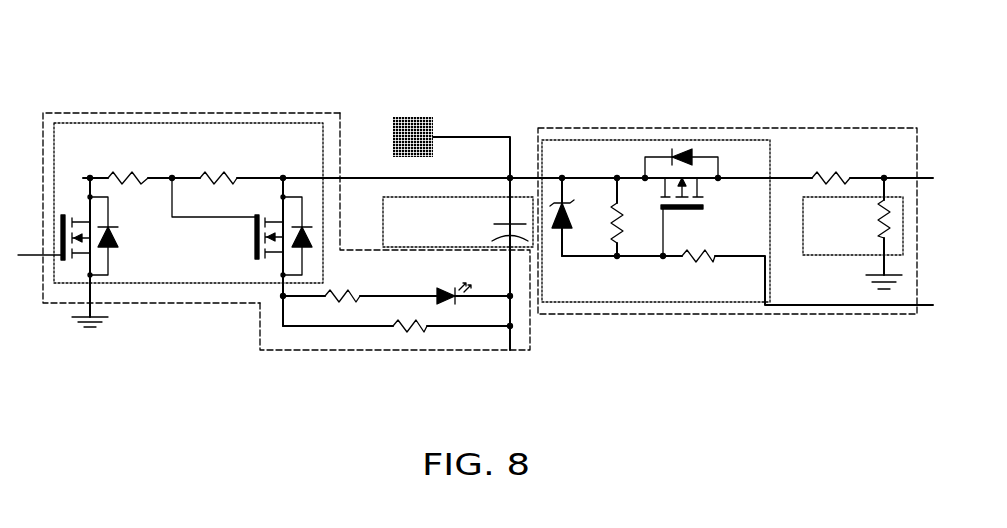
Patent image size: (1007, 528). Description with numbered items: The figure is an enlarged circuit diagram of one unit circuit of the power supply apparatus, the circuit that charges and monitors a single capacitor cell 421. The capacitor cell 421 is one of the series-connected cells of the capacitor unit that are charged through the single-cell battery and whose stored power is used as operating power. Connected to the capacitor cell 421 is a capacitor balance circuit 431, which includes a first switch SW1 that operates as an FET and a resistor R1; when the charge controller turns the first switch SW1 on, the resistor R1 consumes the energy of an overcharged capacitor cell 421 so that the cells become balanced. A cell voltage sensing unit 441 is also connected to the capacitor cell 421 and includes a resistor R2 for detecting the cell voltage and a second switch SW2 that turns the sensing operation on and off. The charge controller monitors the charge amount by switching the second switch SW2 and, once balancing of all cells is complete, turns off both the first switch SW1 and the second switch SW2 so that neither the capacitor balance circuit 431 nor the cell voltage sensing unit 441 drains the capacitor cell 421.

The first switch SW1 is at (182, 113).
The capacitor balance circuit 431 is at (323, 112).
The resistor R1 is at (377, 287).
The capacitor cell 421 is at (472, 190).
The second switch SW2 is at (602, 128).
The cell voltage sensing unit 441 is at (721, 128).
The resistor R2 is at (857, 193).